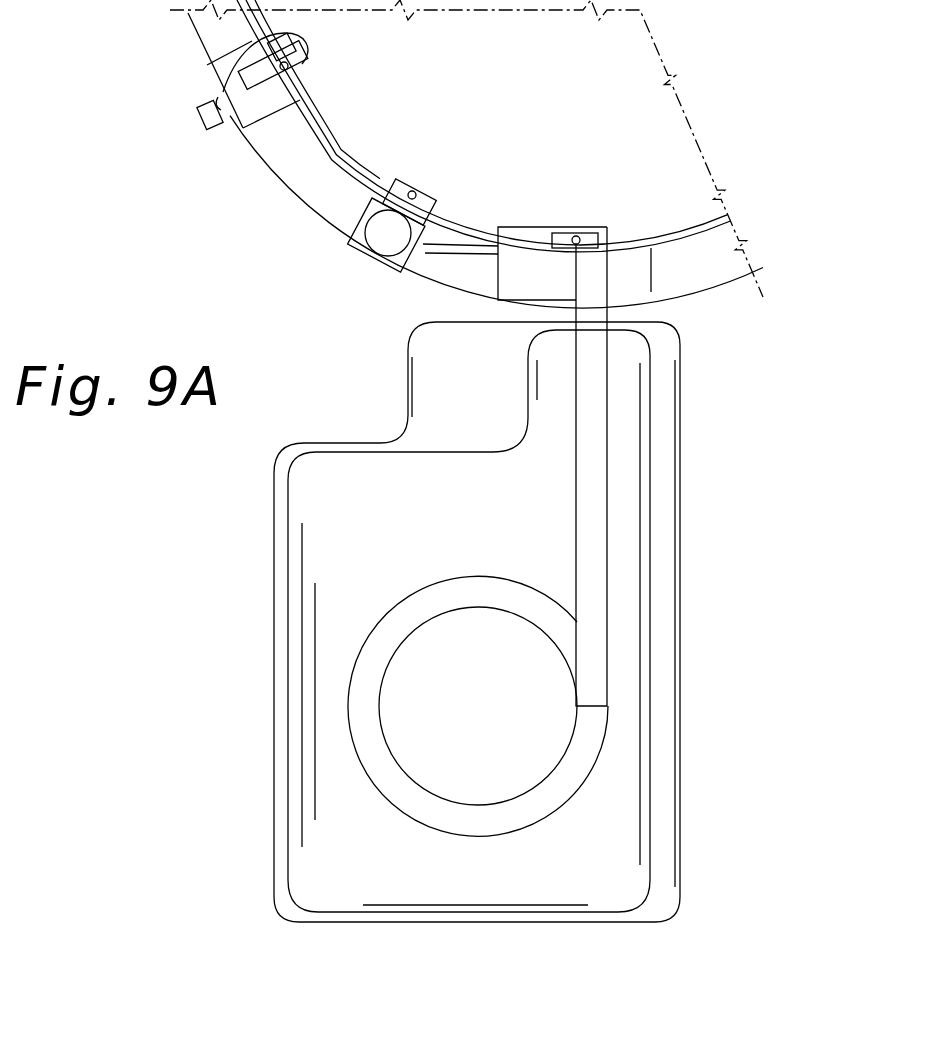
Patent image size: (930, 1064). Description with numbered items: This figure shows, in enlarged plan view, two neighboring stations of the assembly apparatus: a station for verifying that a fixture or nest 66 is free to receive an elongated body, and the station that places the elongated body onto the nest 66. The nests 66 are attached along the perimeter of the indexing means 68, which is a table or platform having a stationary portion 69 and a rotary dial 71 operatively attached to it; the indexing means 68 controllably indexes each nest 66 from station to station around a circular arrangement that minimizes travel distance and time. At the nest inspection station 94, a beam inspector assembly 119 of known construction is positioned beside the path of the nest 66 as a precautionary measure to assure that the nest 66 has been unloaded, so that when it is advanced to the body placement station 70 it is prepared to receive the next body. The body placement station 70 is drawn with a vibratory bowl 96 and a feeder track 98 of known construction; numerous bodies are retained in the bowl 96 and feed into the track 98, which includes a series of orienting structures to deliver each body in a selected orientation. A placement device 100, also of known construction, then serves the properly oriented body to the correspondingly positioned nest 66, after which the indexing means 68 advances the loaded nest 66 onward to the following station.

The nest 66 is at (305, 80).
The indexing means 68 is at (693, 305).
The stationary portion 69 is at (710, 273).
The body placement station 70 is at (716, 617).
The rotary dial 71 is at (668, 172).
The nest inspection station 94 is at (173, 45).
The vibratory bowl 96 is at (352, 677).
The feeder track 98 is at (607, 473).
The placement device 100 is at (593, 227).
The beam inspector assembly 119 is at (218, 125).